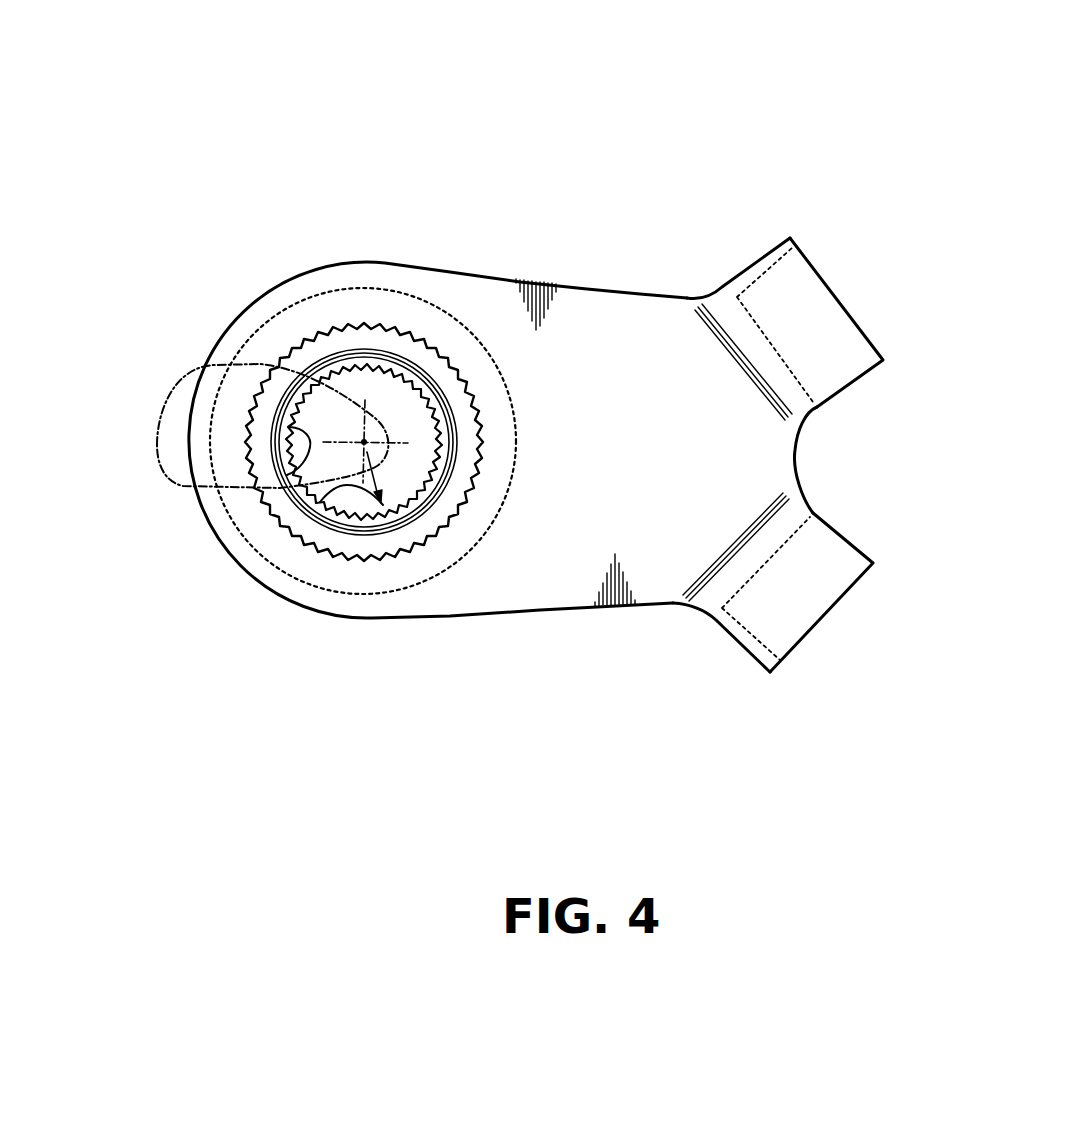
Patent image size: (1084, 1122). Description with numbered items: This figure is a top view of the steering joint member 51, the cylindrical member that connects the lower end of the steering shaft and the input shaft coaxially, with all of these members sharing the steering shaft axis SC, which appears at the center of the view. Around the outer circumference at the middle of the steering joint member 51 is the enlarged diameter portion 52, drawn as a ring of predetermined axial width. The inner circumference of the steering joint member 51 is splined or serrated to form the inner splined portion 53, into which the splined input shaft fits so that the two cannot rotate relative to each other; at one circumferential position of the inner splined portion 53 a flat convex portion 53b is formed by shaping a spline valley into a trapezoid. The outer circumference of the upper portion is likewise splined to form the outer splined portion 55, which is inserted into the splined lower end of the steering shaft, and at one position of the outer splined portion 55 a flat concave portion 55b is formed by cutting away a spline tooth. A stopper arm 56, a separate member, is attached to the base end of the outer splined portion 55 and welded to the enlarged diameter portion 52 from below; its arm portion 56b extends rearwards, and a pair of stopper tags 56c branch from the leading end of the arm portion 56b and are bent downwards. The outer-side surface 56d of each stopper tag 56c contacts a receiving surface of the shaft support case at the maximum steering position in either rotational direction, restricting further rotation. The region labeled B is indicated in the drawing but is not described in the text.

The steering joint member 51 is at (660, 142).
The enlarged diameter portion 52 is at (345, 305).
The inner splined portion 53 is at (325, 480).
The flat convex portion 53b is at (300, 475).
The outer splined portion 55 is at (399, 555).
The flat concave portion 55b is at (283, 490).
The stopper arm 56 is at (637, 290).
The arm portion 56b is at (588, 317).
The stopper tags 56c is at (832, 312).
The outer-side surface 56d is at (768, 257).
The bolt axis region B is at (163, 398).
The steering shaft axis SC is at (387, 458).